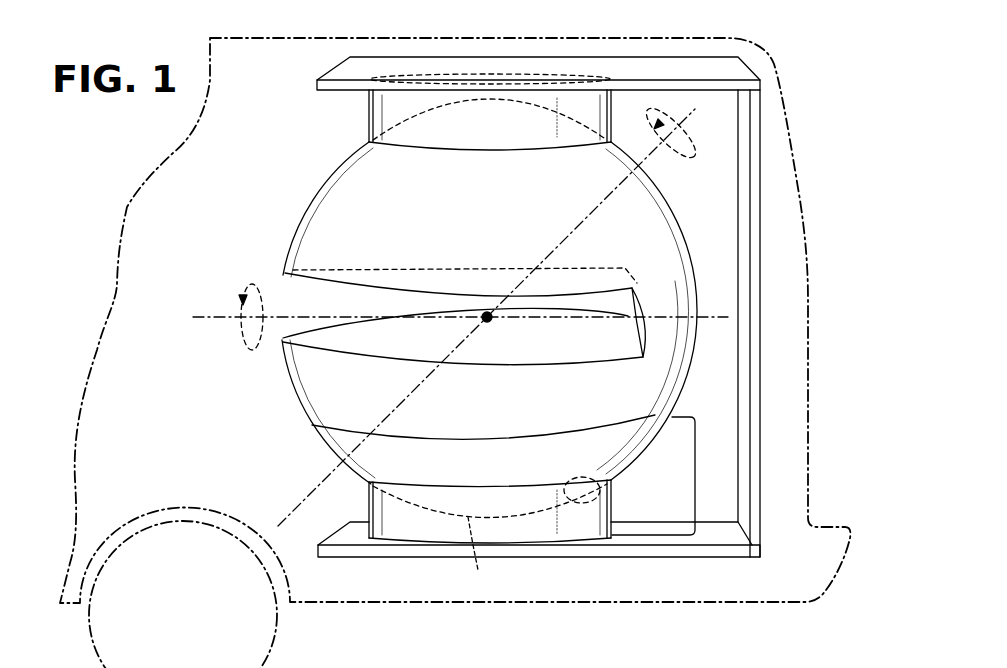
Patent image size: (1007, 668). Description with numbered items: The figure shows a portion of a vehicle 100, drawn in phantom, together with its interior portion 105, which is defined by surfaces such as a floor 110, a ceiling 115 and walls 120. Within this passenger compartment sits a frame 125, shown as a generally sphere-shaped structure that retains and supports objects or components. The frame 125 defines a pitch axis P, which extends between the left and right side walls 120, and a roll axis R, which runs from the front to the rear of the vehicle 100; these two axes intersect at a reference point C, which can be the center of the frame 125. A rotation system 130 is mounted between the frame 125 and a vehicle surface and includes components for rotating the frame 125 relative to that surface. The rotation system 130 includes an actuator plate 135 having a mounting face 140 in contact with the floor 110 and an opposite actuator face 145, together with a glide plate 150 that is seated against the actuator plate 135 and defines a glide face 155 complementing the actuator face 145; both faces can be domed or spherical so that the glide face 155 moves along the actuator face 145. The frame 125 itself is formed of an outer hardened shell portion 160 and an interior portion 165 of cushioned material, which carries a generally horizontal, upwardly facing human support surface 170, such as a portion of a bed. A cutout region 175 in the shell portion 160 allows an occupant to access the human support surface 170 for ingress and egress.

The vehicle 100 is at (806, 219).
The interior portion 105 is at (550, 307).
The floor 110 is at (348, 533).
The ceiling 115 is at (718, 104).
The walls 120 is at (748, 227).
The frame 125 is at (493, 306).
The rotation system 130 is at (702, 458).
The actuator plate 135 is at (502, 116).
The mounting face 140 is at (433, 545).
The actuator face 145 is at (613, 484).
The glide plate 150 is at (620, 449).
The glide face 155 is at (471, 555).
The shell portion 160 is at (357, 142).
The interior portion 165 is at (653, 245).
The human support surface 170 is at (367, 357).
The cutout region 175 is at (312, 297).
The pitch axis P is at (545, 258).
The roll axis R is at (227, 315).
The reference point C is at (492, 322).